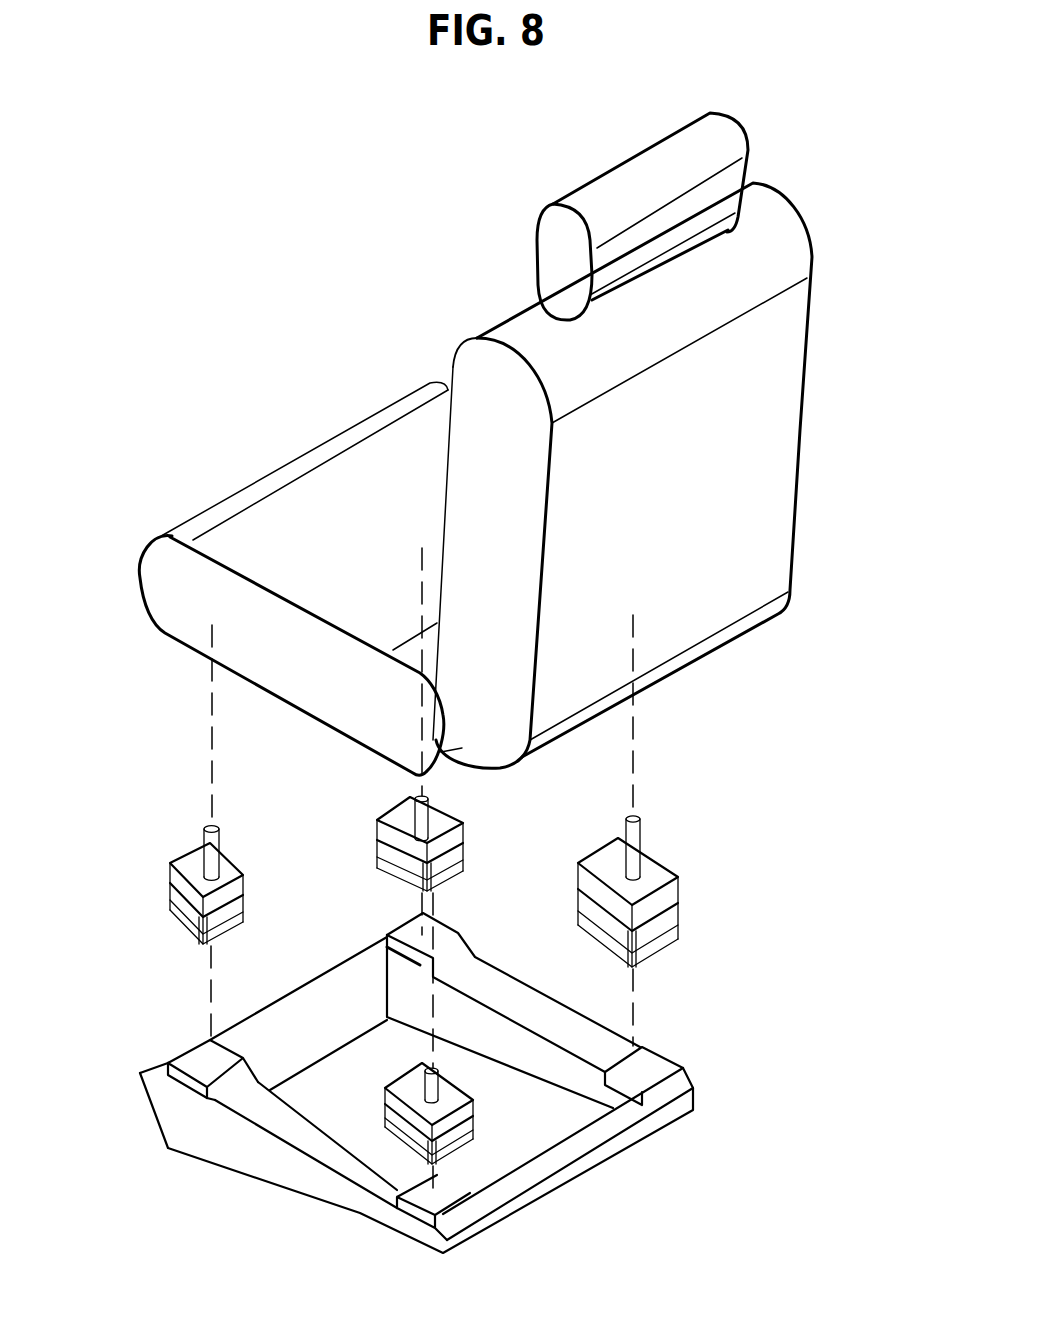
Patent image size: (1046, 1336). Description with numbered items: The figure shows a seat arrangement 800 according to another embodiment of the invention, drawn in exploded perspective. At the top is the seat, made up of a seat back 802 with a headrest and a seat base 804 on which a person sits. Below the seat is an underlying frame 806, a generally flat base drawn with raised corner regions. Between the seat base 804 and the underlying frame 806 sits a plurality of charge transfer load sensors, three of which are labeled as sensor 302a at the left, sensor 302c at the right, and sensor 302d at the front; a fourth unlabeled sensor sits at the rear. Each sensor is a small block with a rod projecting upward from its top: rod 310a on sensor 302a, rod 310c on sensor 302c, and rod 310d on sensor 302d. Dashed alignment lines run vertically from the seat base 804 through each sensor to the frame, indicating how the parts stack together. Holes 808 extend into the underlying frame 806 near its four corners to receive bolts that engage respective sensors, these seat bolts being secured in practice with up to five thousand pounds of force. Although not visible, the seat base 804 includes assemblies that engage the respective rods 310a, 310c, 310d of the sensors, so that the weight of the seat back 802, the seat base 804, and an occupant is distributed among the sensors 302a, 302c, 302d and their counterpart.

The seat arrangement 800 is at (135, 374).
The seat back 802 is at (787, 363).
The seat base 804 is at (242, 537).
The underlying frame 806 is at (573, 1177).
The holes 808 is at (210, 1067).
The charge transfer load sensor 302a is at (235, 897).
The charge transfer load sensor 302c is at (667, 908).
The charge transfer load sensor 302d is at (466, 1128).
The rod 310a is at (213, 847).
The rod 310c is at (641, 837).
The rod 310d is at (438, 1078).